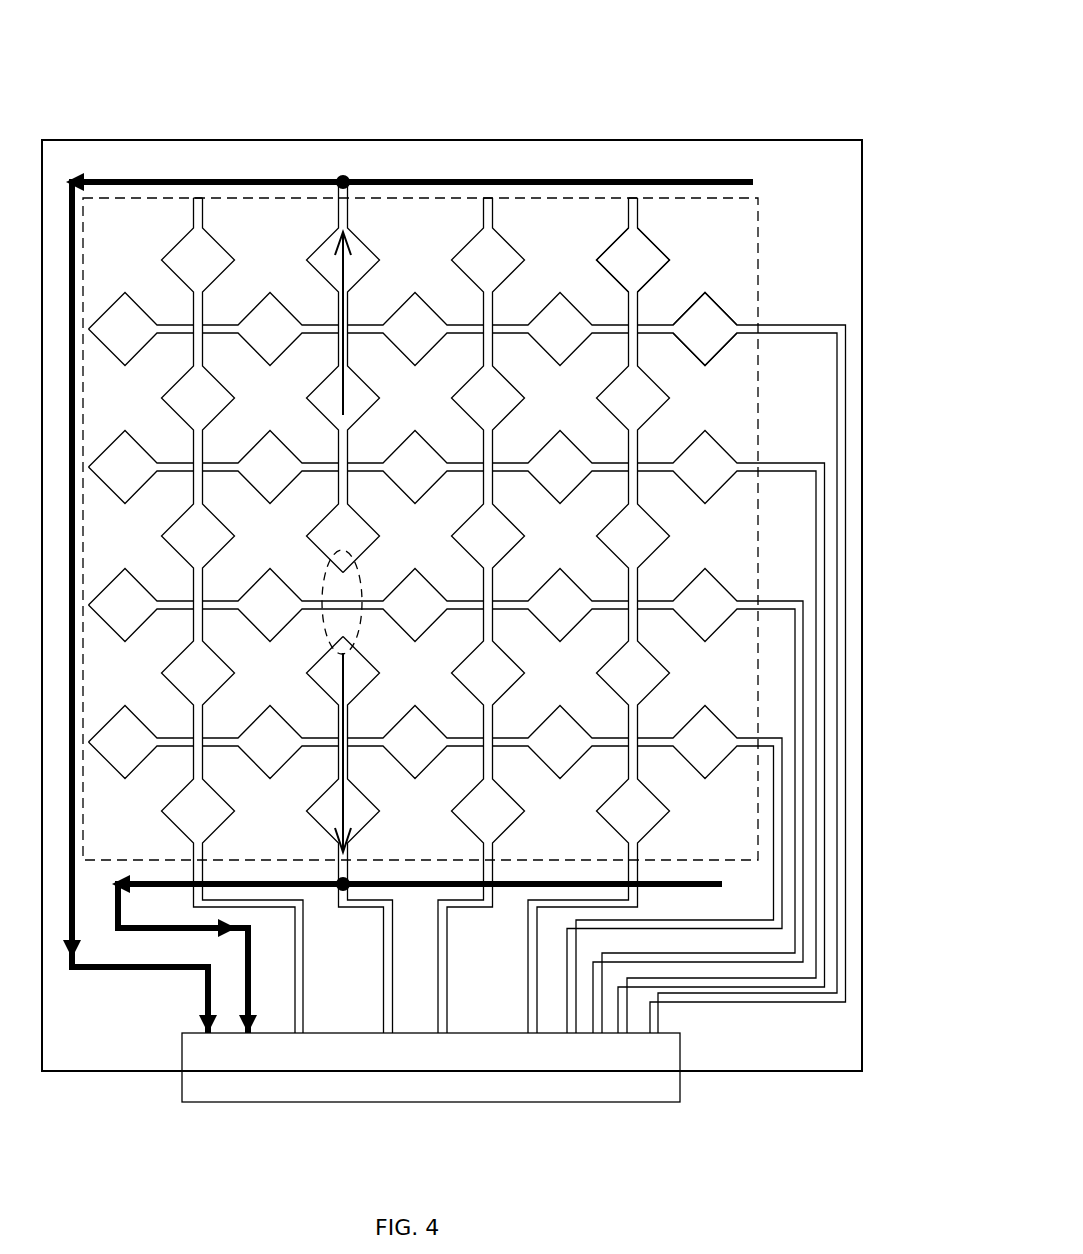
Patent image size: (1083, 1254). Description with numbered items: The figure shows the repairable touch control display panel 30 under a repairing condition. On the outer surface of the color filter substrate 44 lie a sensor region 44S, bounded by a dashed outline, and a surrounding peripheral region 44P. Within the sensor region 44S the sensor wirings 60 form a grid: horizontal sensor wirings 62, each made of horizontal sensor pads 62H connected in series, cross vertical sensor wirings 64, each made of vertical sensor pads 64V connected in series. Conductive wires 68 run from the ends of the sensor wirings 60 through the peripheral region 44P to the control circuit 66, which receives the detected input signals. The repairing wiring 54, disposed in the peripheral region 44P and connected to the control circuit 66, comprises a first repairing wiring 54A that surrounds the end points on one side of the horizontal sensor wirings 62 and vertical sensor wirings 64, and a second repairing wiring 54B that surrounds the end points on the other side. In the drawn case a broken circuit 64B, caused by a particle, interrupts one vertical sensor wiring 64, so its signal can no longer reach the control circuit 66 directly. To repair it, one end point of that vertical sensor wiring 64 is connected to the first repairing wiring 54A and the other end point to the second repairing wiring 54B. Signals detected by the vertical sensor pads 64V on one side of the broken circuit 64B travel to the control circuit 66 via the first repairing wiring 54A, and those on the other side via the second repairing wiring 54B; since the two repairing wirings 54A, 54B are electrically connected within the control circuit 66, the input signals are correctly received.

The repairable touch control display panel 30 is at (479, 613).
The color filter substrate 44 is at (775, 140).
The sensor region 44S is at (760, 397).
The peripheral region 44P is at (777, 1042).
The repairing wiring 54 is at (406, 686).
The first repairing wiring 54A is at (72, 972).
The second repairing wiring 54B is at (145, 930).
The sensor wirings 60 is at (494, 522).
The horizontal sensor wirings 62 is at (452, 516).
The horizontal sensor pads 62H is at (728, 340).
The vertical sensor wirings 64 is at (489, 522).
The vertical sensor pads 64V is at (652, 270).
The broken circuit 64B is at (357, 578).
The control circuit 66 is at (428, 1077).
The conductive wires 68 is at (445, 1007).